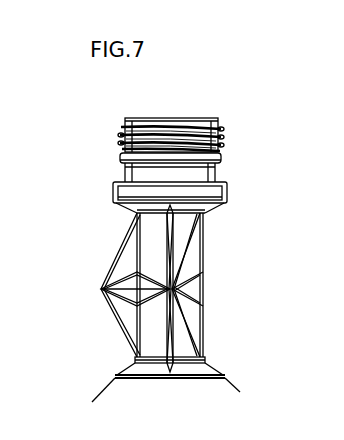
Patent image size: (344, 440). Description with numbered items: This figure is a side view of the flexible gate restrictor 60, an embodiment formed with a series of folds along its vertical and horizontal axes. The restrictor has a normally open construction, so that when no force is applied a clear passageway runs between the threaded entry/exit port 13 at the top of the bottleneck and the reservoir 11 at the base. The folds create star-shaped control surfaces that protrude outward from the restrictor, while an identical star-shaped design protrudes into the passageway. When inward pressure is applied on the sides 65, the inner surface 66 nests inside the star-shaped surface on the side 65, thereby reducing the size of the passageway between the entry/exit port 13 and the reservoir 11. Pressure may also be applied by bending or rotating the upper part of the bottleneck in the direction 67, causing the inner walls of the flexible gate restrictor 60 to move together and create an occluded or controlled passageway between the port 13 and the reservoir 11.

The flexible gate restrictor 60 is at (268, 81).
The entry/exit port 13 is at (172, 112).
The direction of bending or rotating 67 is at (230, 157).
The sides of the flexible gate restrictor 65 is at (62, 290).
The inner surface 66 is at (196, 289).
The reservoir 11 is at (187, 392).